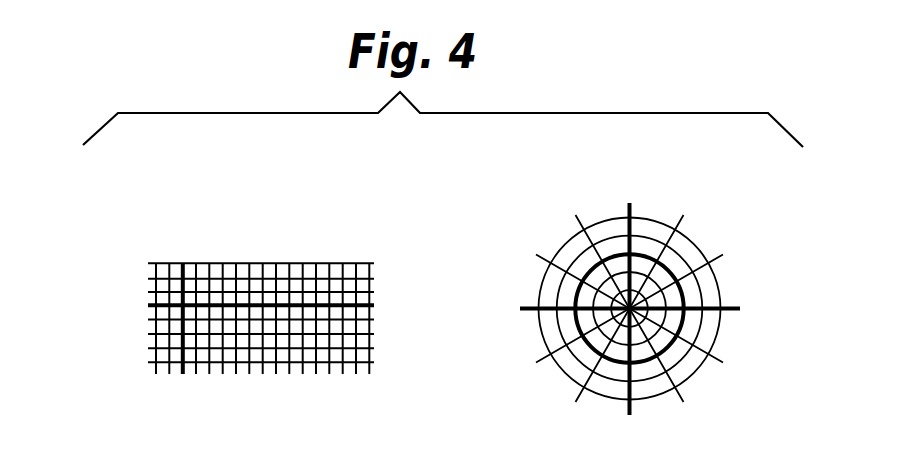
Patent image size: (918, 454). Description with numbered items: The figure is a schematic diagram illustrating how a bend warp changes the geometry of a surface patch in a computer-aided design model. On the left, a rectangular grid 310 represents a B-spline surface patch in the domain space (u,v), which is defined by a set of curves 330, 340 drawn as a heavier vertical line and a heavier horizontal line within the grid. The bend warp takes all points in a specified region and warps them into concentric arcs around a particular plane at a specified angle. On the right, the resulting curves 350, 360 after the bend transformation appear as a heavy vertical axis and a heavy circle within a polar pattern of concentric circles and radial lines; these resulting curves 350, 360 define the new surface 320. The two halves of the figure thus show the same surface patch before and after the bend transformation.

The rectangular grid 310 is at (188, 242).
The curve 340 is at (150, 306).
The curve 330 is at (182, 376).
The new surface 320 is at (645, 213).
The resulting curve 350 is at (625, 206).
The resulting curve 360 is at (692, 250).